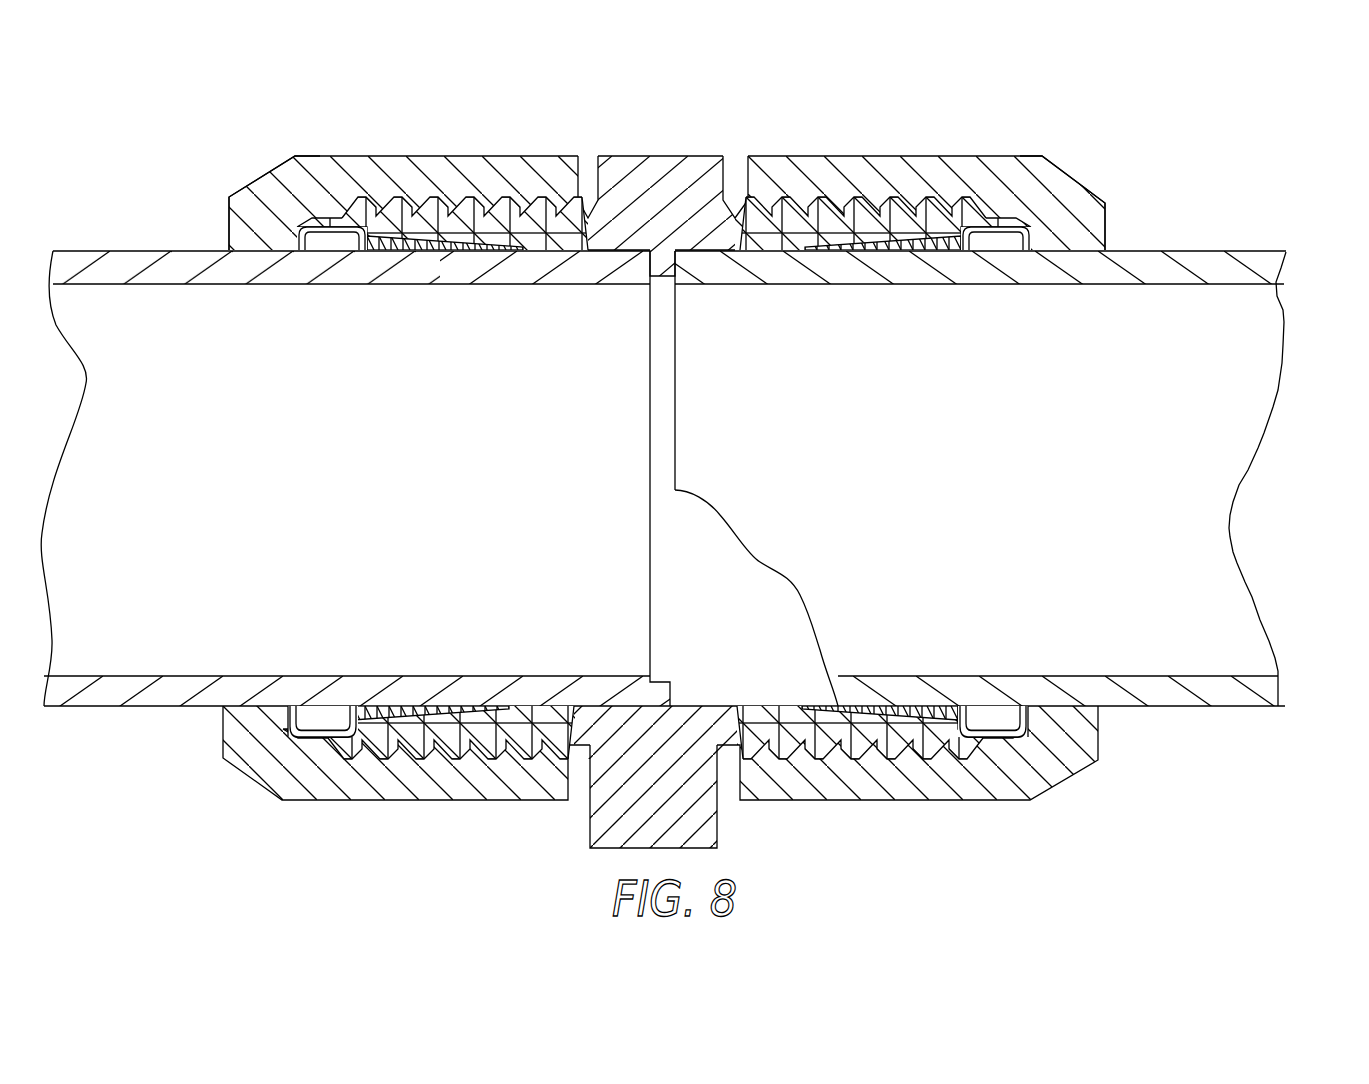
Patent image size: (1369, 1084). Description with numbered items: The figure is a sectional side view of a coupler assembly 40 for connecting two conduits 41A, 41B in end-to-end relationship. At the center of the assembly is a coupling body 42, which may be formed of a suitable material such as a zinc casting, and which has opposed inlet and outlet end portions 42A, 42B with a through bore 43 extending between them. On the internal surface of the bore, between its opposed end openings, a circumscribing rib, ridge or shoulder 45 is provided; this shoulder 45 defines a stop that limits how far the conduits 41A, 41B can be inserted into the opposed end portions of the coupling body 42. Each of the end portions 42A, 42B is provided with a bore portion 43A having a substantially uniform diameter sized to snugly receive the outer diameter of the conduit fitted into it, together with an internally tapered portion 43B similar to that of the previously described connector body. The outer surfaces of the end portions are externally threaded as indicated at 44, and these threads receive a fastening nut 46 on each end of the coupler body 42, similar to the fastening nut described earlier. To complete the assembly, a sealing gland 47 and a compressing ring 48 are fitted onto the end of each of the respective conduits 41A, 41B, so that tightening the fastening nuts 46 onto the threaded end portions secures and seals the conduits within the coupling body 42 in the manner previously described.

The coupler assembly 40 is at (789, 466).
The conduit 41A is at (170, 650).
The conduit 41B is at (1193, 599).
The coupling body 42 is at (677, 203).
The inlet end portion 42A is at (858, 735).
The outlet end portion 42B is at (455, 700).
The through bore 43 is at (742, 649).
The bore portion 43A is at (545, 694).
The internally tapered portion 43B is at (440, 720).
The external threads 44 is at (467, 200).
The shoulder 45 is at (653, 157).
The fastening nut 46 is at (413, 157).
The sealing gland 47 is at (428, 245).
The compressing ring 48 is at (327, 255).